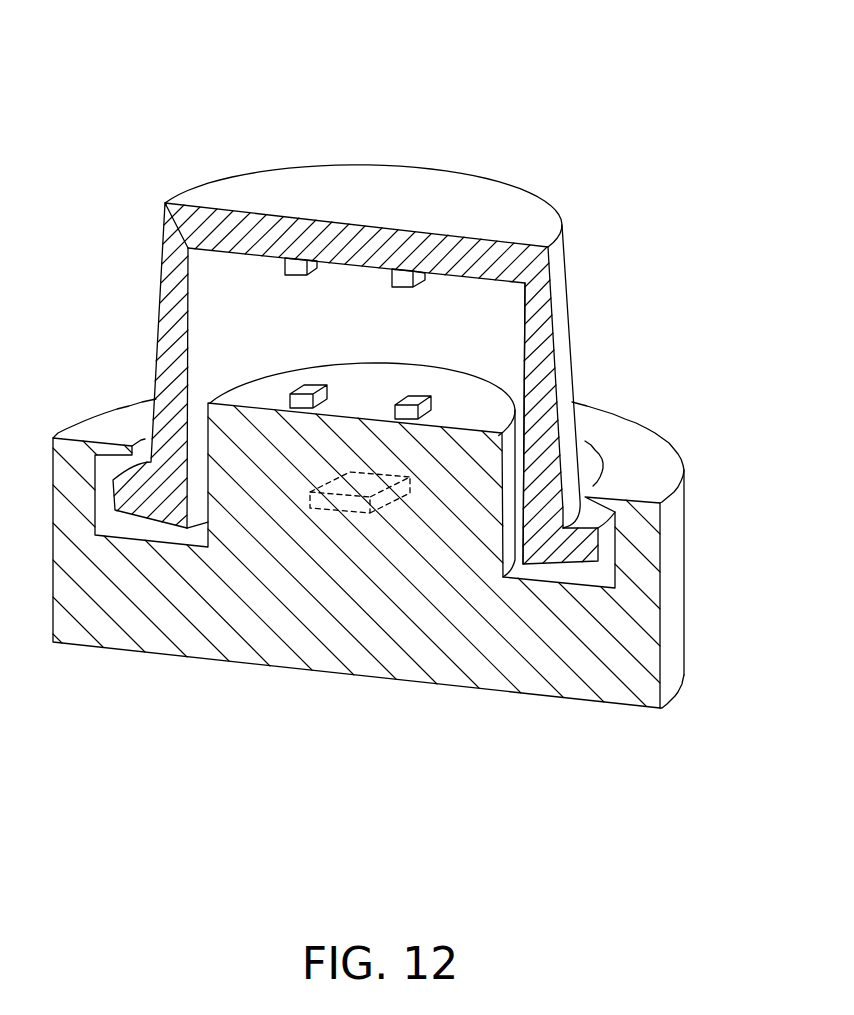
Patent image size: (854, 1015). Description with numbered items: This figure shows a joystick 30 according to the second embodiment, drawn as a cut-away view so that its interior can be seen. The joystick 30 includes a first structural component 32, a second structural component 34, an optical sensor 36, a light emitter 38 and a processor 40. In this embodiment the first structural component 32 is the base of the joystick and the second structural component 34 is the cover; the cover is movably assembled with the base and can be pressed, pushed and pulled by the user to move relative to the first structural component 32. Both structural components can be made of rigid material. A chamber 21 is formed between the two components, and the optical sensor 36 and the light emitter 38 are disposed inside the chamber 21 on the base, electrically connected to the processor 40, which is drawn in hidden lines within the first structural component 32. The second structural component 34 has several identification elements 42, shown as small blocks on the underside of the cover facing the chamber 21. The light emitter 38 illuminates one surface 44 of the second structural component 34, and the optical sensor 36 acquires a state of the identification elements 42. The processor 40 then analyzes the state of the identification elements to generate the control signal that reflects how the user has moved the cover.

The joystick 30 is at (650, 68).
The chamber 21 is at (492, 323).
The first structural component 32 is at (143, 633).
The second structural component 34 is at (490, 200).
The optical sensor 36 is at (306, 388).
The light emitter 38 is at (413, 399).
The processor 40 is at (330, 510).
The identification elements 42 is at (298, 264).
The surface 44 is at (237, 252).